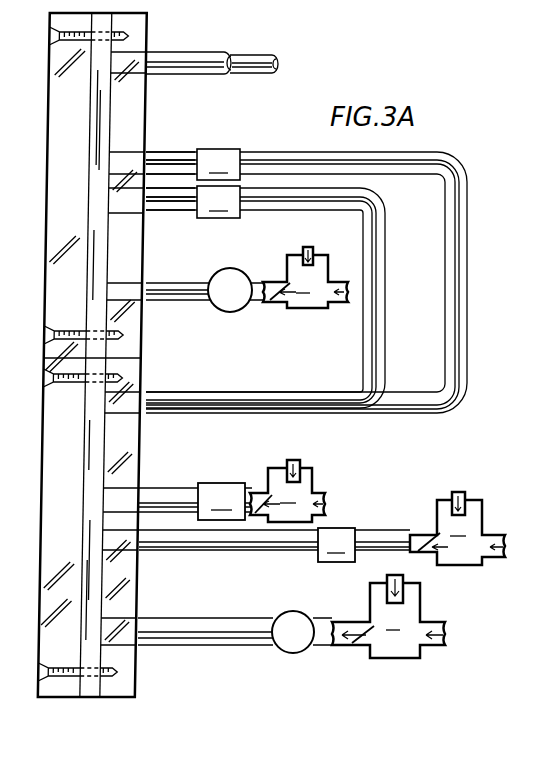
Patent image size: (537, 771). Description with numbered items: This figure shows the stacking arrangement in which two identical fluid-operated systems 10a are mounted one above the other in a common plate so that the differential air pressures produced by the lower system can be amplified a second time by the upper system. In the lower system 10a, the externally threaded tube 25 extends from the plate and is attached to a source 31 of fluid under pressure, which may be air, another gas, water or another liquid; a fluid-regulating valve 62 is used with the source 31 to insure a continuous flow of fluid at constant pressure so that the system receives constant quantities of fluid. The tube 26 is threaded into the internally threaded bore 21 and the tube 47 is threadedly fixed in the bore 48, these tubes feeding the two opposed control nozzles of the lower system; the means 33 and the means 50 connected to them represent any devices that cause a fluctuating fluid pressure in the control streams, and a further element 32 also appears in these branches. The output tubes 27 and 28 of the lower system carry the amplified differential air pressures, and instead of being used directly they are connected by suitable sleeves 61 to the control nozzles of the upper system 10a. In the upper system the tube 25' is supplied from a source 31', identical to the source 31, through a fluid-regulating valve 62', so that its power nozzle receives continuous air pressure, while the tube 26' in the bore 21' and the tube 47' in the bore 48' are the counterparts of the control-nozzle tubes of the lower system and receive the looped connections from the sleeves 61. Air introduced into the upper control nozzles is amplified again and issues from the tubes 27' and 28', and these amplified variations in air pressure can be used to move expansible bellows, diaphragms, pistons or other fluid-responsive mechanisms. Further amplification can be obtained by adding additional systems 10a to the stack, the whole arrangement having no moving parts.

The fluid-operated system 10a is at (46, 279).
The tube 27' is at (188, 51).
The tube 28' is at (254, 50).
The tube 27 is at (282, 298).
The tube 28 is at (322, 282).
The inner supply tube 47' is at (178, 146).
The outer supply tube 48' is at (162, 150).
The outer return tube 21' is at (166, 214).
The inner return tube 26' is at (176, 220).
The regulator supply tube 25' is at (206, 278).
The sleeve 61 is at (218, 183).
The voltage regulator 62' is at (230, 279).
The source 31' is at (305, 277).
The bore 48 is at (167, 490).
The tube 47 is at (195, 489).
The fluctuating-pressure means 50 is at (221, 501).
The control valve 32 is at (377, 512).
The bore 21 is at (273, 554).
The tube 26 is at (274, 561).
The fluctuating-pressure means 33 is at (336, 545).
The tube 25 is at (235, 622).
The fluid-regulating valve 62 is at (293, 621).
The source of fluid under pressure 31 is at (388, 616).